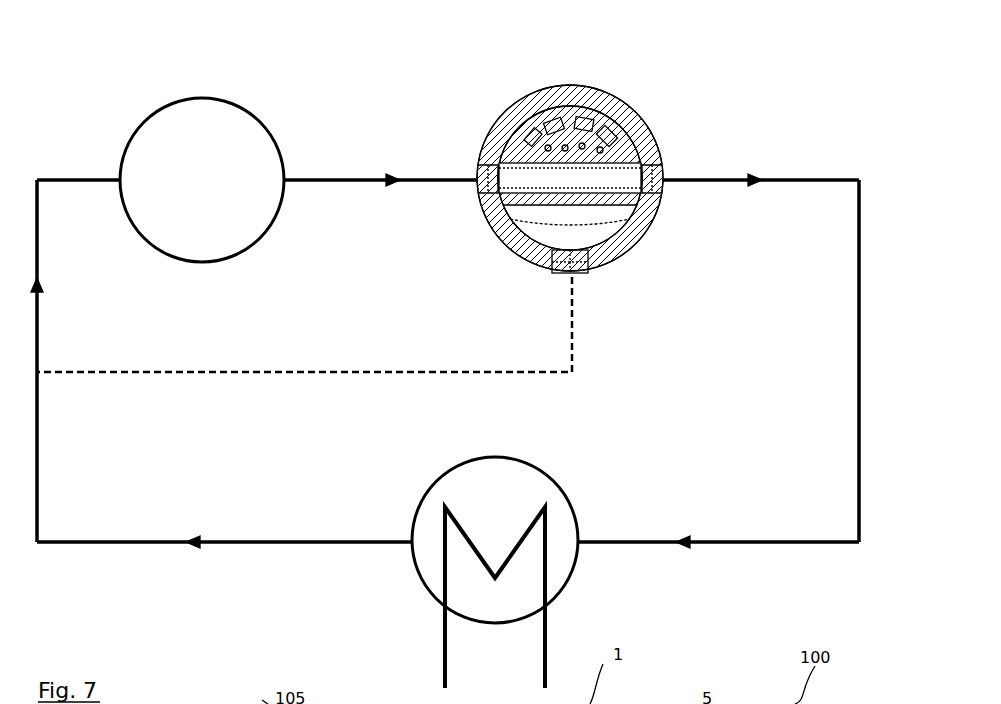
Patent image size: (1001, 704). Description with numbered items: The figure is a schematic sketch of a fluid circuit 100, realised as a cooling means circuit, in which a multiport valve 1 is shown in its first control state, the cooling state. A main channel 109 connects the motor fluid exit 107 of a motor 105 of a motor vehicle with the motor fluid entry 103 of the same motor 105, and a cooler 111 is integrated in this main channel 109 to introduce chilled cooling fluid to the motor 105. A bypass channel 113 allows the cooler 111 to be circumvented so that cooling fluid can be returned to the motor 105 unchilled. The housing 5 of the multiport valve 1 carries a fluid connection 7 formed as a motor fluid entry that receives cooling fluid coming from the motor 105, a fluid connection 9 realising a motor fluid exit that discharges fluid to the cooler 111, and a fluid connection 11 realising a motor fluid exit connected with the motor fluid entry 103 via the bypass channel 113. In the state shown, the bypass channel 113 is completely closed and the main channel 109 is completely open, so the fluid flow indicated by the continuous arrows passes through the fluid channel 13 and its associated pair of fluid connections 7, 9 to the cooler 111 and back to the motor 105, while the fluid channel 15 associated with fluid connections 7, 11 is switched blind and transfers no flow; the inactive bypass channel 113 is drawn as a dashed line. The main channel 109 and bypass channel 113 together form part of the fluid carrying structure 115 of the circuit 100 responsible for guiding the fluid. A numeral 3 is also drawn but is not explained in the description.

The multiport valve 1 is at (594, 183).
The cell housing 3 is at (640, 135).
The housing 5 is at (630, 105).
The fluid connection 7 is at (480, 158).
The fluid connection 9 is at (663, 163).
The fluid connection 11 is at (553, 272).
The fluid channel 13 is at (580, 188).
The fluid channel 15 is at (580, 246).
The fluid circuit 100 is at (800, 120).
The motor fluid entry 103 is at (120, 178).
The motor 105 is at (222, 127).
The motor fluid exit 107 is at (287, 178).
The main channel 109 is at (859, 292).
The cooler 111 is at (556, 553).
The bypass channel 113 is at (240, 373).
The fluid carrying structure 115 is at (850, 430).